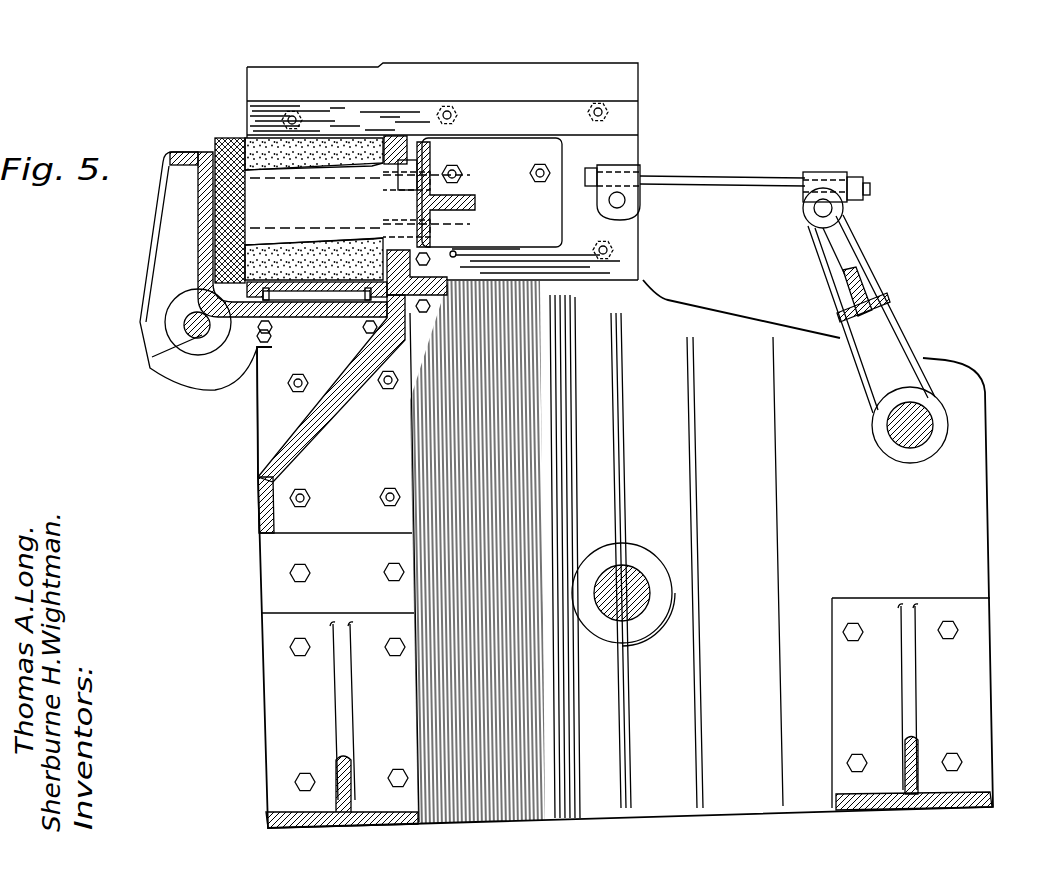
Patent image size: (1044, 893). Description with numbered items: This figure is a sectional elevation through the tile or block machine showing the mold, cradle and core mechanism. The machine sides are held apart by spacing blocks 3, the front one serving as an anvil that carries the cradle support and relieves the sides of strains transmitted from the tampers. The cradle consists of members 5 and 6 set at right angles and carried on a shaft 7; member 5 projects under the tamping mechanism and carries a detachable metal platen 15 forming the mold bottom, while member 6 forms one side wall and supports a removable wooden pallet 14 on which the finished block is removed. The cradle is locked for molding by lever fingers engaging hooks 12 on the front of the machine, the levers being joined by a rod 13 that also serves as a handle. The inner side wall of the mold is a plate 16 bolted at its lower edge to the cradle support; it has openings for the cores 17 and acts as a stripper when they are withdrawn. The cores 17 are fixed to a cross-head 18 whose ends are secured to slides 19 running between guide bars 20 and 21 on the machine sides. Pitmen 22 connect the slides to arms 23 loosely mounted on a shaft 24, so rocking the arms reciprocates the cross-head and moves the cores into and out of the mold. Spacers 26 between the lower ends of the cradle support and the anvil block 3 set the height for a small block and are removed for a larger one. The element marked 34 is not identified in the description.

The spacing block 3 is at (843, 692).
The cradle member 5 is at (295, 313).
The cradle member 6 is at (163, 221).
The shaft 7 is at (195, 338).
The hook 12 is at (380, 428).
The rod 13 is at (407, 720).
The removable pallet 14 is at (233, 197).
The metal platen 15 is at (339, 292).
The plate 16 is at (395, 150).
The core 17 is at (337, 209).
The cross-head 18 is at (433, 151).
The slide 19 is at (613, 149).
The guide bar 20 is at (504, 115).
The guide bar 21 is at (506, 264).
The pitman 22 is at (790, 182).
The arm 23 is at (865, 262).
The shaft 24 is at (927, 425).
The spacer 26 is at (276, 589).
The shaft 34 is at (643, 590).